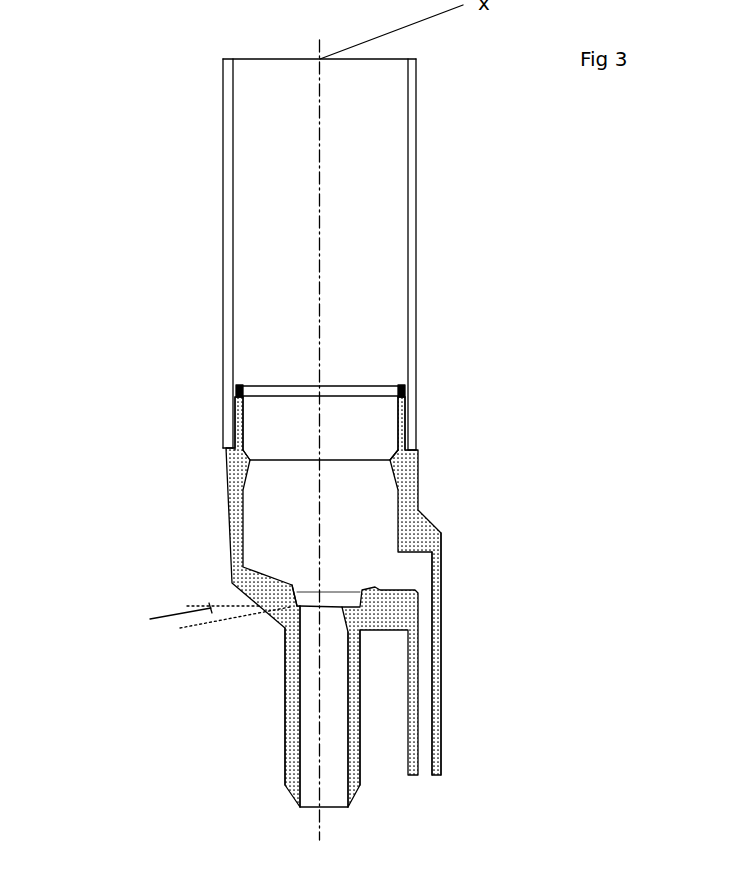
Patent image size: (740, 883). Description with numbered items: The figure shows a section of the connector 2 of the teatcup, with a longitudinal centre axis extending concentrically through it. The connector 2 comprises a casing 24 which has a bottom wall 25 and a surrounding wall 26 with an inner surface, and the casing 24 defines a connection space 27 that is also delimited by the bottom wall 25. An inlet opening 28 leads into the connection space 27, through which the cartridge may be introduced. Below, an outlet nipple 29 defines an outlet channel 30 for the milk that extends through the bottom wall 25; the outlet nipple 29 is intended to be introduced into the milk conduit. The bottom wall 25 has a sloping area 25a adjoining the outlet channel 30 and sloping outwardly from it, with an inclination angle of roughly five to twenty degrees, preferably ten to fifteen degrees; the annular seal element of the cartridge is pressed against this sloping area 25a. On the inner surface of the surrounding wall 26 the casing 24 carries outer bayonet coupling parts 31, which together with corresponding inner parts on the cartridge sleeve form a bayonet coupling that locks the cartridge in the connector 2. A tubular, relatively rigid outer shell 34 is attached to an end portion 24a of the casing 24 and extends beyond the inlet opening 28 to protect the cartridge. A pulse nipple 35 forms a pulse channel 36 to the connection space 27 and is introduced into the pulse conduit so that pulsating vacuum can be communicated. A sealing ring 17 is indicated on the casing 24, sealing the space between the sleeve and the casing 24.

The connector 2 is at (440, 492).
The outer shell 34 is at (223, 193).
The inlet opening 28 is at (232, 326).
The sealing ring 17 is at (236, 391).
The casing 24 is at (236, 538).
The end portion of the casing 24a is at (235, 420).
The surrounding wall 26 is at (228, 498).
The sloping area 25a is at (231, 580).
The pulse channel 36 is at (420, 580).
The pulse nipple 35 is at (438, 707).
The bottom wall 25 is at (358, 598).
The outlet nipple 29 is at (284, 692).
The outlet channel 30 is at (332, 721).
The connection space 27 is at (303, 509).
The outer bayonet coupling parts 31 is at (253, 460).